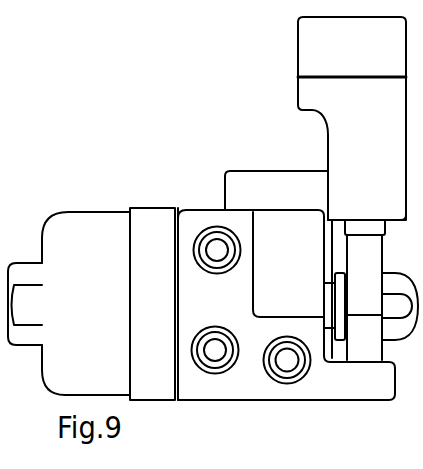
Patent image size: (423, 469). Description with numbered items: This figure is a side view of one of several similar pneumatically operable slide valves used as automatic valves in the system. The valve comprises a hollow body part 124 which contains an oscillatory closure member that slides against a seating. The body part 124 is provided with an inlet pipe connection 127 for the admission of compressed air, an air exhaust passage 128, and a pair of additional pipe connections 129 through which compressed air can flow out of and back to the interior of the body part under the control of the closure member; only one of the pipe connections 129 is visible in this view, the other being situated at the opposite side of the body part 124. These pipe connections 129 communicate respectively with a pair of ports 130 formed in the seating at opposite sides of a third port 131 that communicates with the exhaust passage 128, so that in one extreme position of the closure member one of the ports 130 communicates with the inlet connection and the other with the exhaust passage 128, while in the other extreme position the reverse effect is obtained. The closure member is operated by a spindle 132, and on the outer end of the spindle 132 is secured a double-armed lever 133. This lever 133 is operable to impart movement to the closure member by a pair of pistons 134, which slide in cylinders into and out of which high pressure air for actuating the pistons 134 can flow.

The hollow body part 124 is at (286, 309).
The inlet pipe connection 127 is at (215, 244).
The air exhaust passage 128 is at (289, 367).
The additional pipe connection 129 is at (214, 357).
The port 130 is at (360, 118).
The third port 131 is at (375, 155).
The spindle 132 is at (330, 297).
The double-armed lever 133 is at (352, 249).
The piston 134 is at (402, 294).